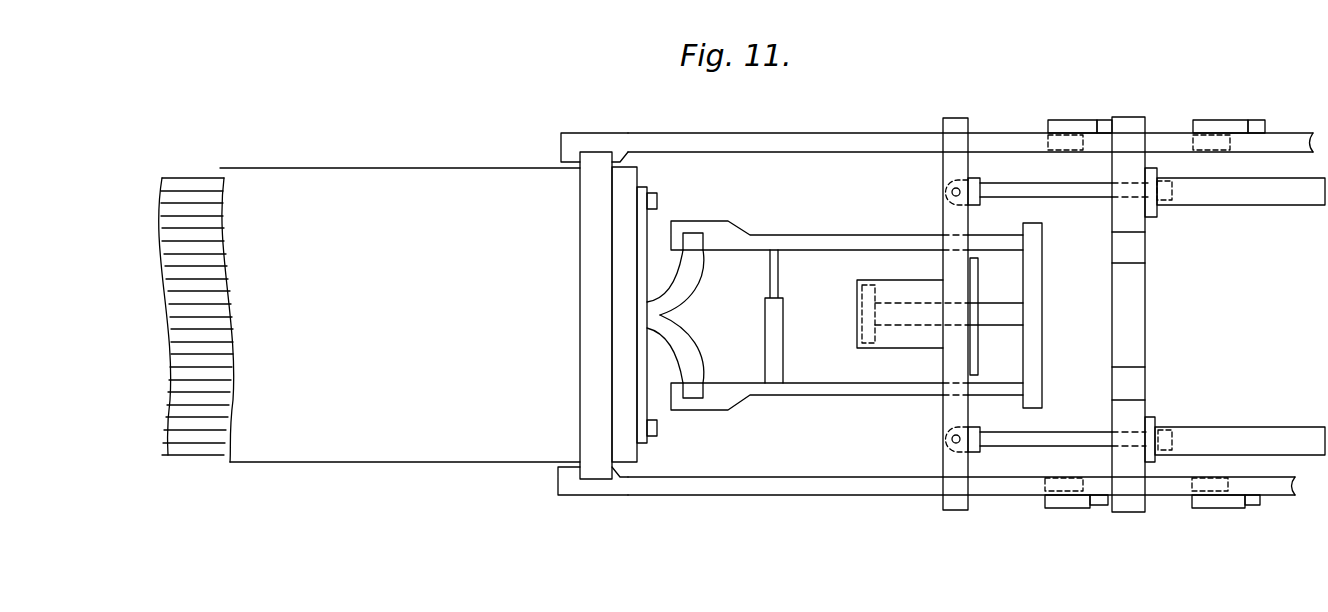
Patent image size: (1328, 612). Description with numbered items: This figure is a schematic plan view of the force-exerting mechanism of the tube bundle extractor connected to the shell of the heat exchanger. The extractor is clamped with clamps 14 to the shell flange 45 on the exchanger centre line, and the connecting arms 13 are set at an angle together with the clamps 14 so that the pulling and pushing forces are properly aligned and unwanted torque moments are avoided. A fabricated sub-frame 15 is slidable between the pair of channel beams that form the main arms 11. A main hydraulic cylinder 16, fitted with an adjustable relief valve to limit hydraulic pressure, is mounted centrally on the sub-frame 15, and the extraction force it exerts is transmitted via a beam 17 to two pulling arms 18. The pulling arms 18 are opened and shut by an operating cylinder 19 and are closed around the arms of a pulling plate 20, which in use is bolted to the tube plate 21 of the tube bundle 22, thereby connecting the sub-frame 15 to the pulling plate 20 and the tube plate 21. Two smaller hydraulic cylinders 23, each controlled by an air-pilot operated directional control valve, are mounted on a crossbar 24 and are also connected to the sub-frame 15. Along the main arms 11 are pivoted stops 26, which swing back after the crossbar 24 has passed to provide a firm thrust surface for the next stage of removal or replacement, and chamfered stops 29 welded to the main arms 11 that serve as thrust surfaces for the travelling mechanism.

The main arms 11 is at (1275, 487).
The connecting arms 13 is at (760, 482).
The clamps 14 is at (580, 133).
The sub-frame 15 is at (957, 170).
The main hydraulic cylinder 16 is at (890, 320).
The beam 17 is at (1032, 400).
The pulling arms 18 is at (678, 238).
The operating cylinder 19 is at (775, 310).
The pulling plate 20 is at (690, 392).
The tube plate 21 is at (624, 175).
The tube bundle 22 is at (195, 185).
The smaller hydraulic cylinders 23 is at (1245, 197).
The crossbar 24 is at (1128, 313).
The pivoted stops 26 is at (1200, 123).
The chamfered stops 29 is at (1065, 140).
The shell flange 45 is at (592, 362).